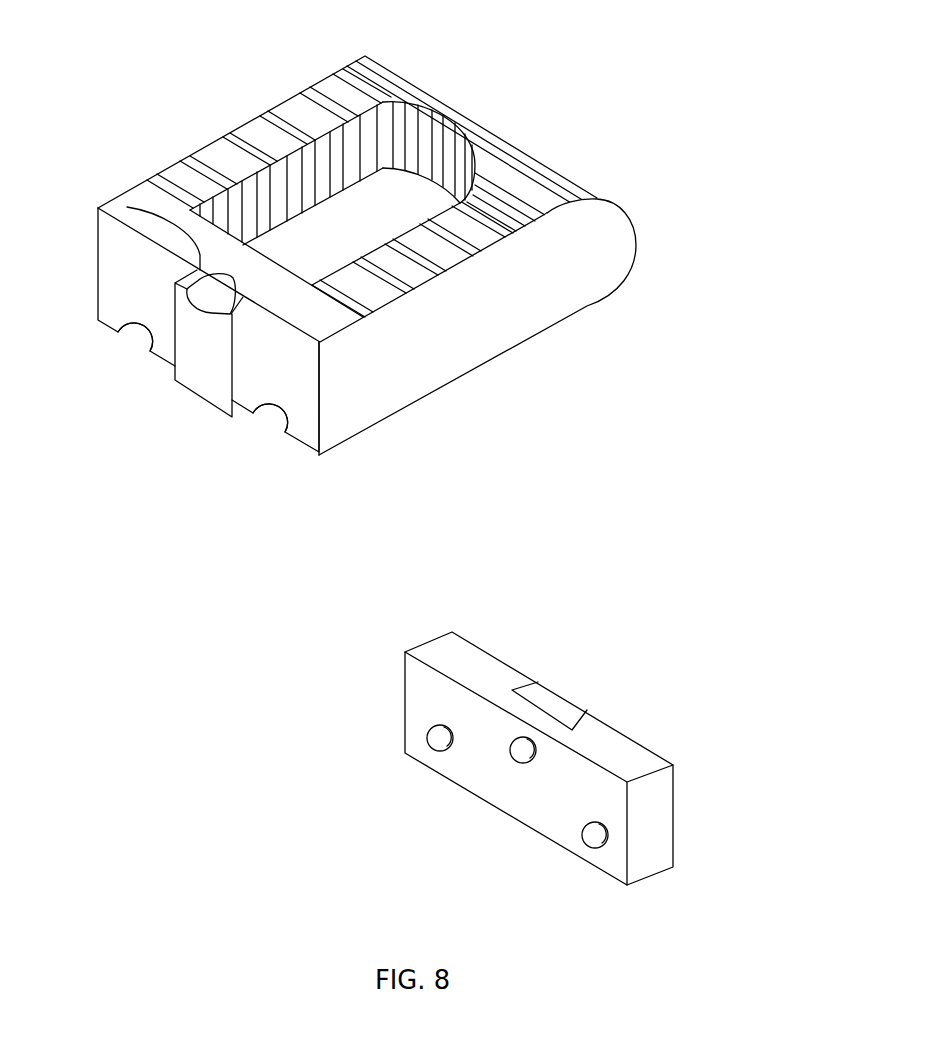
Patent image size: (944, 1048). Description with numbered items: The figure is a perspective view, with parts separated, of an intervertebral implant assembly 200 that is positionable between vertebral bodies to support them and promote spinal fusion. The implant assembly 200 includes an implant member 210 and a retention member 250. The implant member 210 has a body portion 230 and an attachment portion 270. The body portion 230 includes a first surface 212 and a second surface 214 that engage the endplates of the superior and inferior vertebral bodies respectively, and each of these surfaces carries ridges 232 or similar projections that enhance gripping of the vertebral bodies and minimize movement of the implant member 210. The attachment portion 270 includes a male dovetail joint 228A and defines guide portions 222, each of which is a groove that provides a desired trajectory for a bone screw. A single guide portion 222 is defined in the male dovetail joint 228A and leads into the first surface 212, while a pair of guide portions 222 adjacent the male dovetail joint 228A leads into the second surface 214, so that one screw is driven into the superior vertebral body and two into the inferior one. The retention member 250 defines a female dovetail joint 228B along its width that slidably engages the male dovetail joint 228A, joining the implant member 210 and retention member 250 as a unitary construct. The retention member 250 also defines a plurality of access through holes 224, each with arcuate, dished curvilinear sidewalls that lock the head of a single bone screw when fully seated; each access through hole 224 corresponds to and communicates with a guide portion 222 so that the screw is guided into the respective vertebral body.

The intervertebral implant assembly 200 is at (238, 599).
The implant member 210 is at (686, 218).
The first surface 212 is at (402, 268).
The second surface 214 is at (546, 328).
The guide portions 222 is at (123, 198).
The access through holes 224 is at (438, 745).
The male dovetail joint 228A is at (198, 378).
The female dovetail joint 228B is at (547, 710).
The body portion 230 is at (641, 252).
The ridges 232 is at (329, 100).
The retention member 250 is at (732, 818).
The attachment portion 270 is at (293, 408).